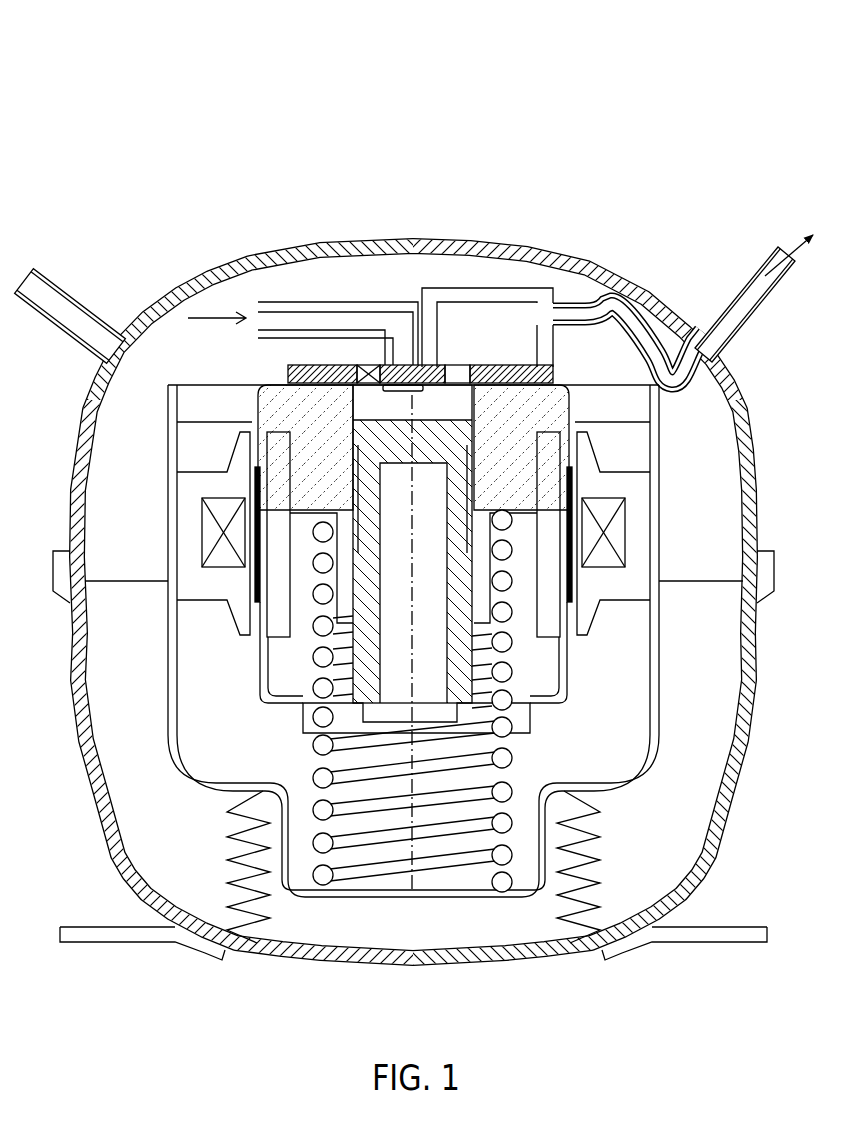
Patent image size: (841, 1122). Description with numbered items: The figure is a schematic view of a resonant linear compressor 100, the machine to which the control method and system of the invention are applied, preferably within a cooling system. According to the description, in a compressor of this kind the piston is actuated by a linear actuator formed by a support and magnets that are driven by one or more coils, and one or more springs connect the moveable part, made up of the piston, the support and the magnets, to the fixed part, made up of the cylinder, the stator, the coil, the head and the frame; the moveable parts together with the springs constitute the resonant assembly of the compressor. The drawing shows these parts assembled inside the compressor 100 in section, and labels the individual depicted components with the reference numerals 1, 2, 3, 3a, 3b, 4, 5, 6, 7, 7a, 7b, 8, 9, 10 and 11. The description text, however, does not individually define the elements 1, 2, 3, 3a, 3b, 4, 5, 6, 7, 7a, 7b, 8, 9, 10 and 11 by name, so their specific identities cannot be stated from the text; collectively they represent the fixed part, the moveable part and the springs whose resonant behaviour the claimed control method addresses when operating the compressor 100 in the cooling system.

The resonant linear compressor 100 is at (211, 91).
The rotor / shaft 1 is at (427, 440).
The stator 2 is at (502, 415).
The muffler 3 is at (470, 289).
The valve 3a is at (397, 364).
The muffler chamber 3b is at (463, 350).
The frame 4 is at (248, 685).
The bearing 5 is at (260, 548).
The coil 6 is at (226, 532).
The discharge tube 7 is at (621, 303).
The first spring portion 7a is at (517, 645).
The second spring portion 7b is at (513, 763).
The valve 8 is at (365, 356).
The suction pipe 9 is at (50, 270).
The discharge pipe 10 is at (723, 290).
The shell 11 is at (172, 281).